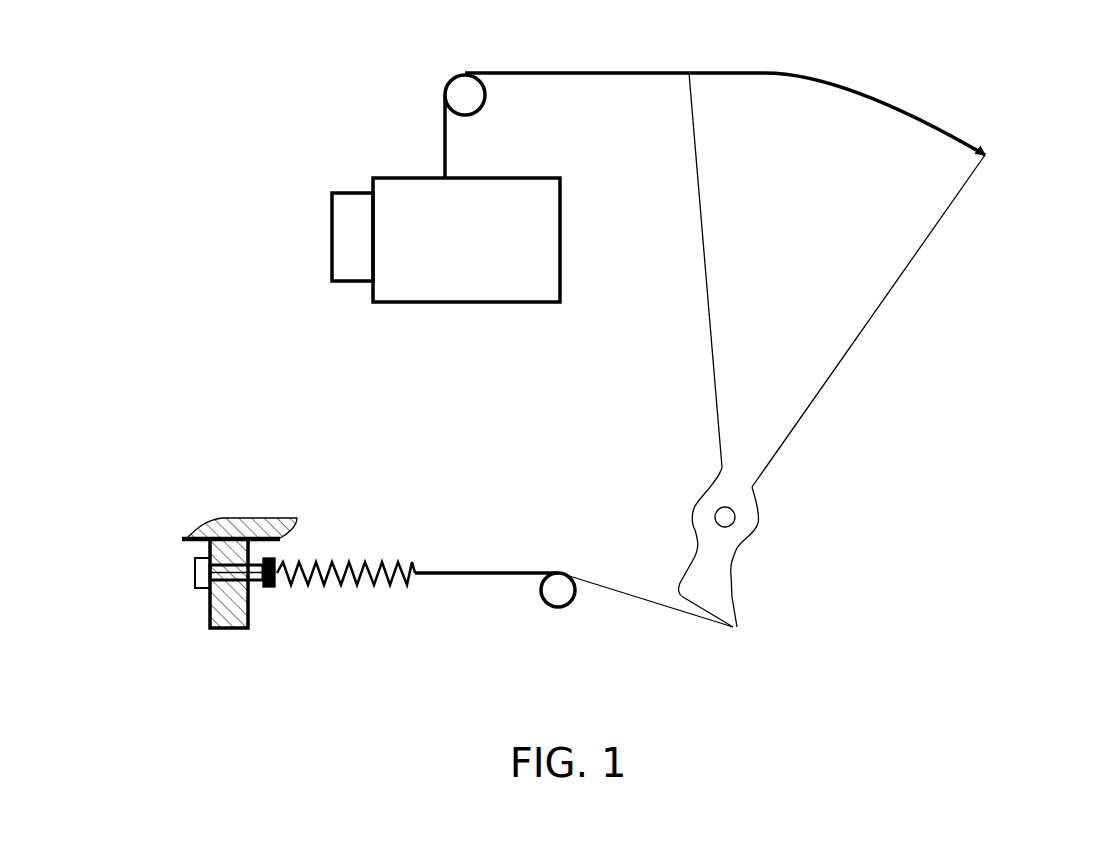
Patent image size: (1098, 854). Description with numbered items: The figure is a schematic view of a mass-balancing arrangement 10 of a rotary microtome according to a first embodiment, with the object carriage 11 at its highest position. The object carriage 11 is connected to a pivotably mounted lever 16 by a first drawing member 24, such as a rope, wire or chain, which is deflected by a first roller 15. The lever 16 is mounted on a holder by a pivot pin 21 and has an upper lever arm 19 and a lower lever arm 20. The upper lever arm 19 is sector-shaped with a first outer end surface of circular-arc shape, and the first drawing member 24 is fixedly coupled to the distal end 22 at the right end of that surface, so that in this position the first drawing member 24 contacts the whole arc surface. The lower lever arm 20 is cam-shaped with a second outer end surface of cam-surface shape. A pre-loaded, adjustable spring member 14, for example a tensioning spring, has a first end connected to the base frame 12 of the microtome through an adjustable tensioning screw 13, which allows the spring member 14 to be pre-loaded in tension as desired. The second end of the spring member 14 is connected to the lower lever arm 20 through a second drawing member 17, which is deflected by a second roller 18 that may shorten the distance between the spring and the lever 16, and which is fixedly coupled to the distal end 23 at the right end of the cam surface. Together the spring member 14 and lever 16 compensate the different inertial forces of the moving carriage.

The mass-balancing arrangement 10 is at (230, 307).
The object carriage 11 is at (382, 228).
The base frame 12 is at (233, 537).
The adjustable tensioning screw 13 is at (203, 575).
The spring member 14 is at (358, 578).
The first roller 15 is at (465, 93).
The lever 16 is at (670, 300).
The second drawing member 17 is at (518, 575).
The second roller 18 is at (558, 597).
The upper lever arm 19 is at (855, 280).
The lower lever arm 20 is at (712, 583).
The pivot pin 21 is at (735, 520).
The distal end of the first outer end surface 22 is at (987, 158).
The distal end of the second outer end surface 23 is at (733, 627).
The first drawing member 24 is at (600, 73).